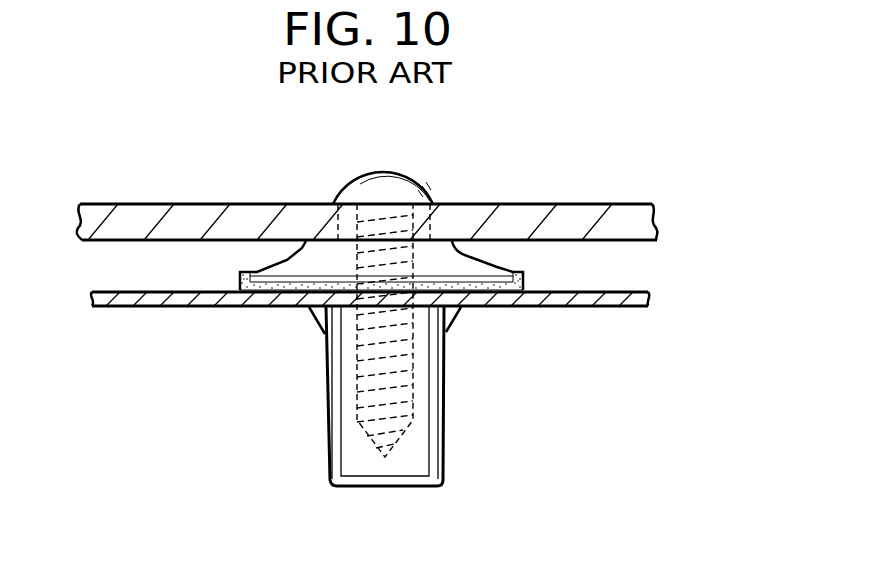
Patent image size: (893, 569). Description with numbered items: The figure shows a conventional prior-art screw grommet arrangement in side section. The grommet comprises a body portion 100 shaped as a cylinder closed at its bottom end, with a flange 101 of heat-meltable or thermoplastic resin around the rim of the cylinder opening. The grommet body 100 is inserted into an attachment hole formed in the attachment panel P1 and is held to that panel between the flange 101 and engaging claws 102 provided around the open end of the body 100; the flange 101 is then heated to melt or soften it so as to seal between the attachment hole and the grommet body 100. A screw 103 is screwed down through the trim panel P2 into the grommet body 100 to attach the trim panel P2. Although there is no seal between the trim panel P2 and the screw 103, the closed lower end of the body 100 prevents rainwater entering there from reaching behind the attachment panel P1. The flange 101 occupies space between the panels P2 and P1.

The grommet body 100 is at (444, 456).
The flange 101 is at (490, 262).
The engaging claws 102 is at (316, 316).
The screw 103 is at (415, 176).
The attachment panel P1 is at (632, 304).
The trim panel P2 is at (625, 218).